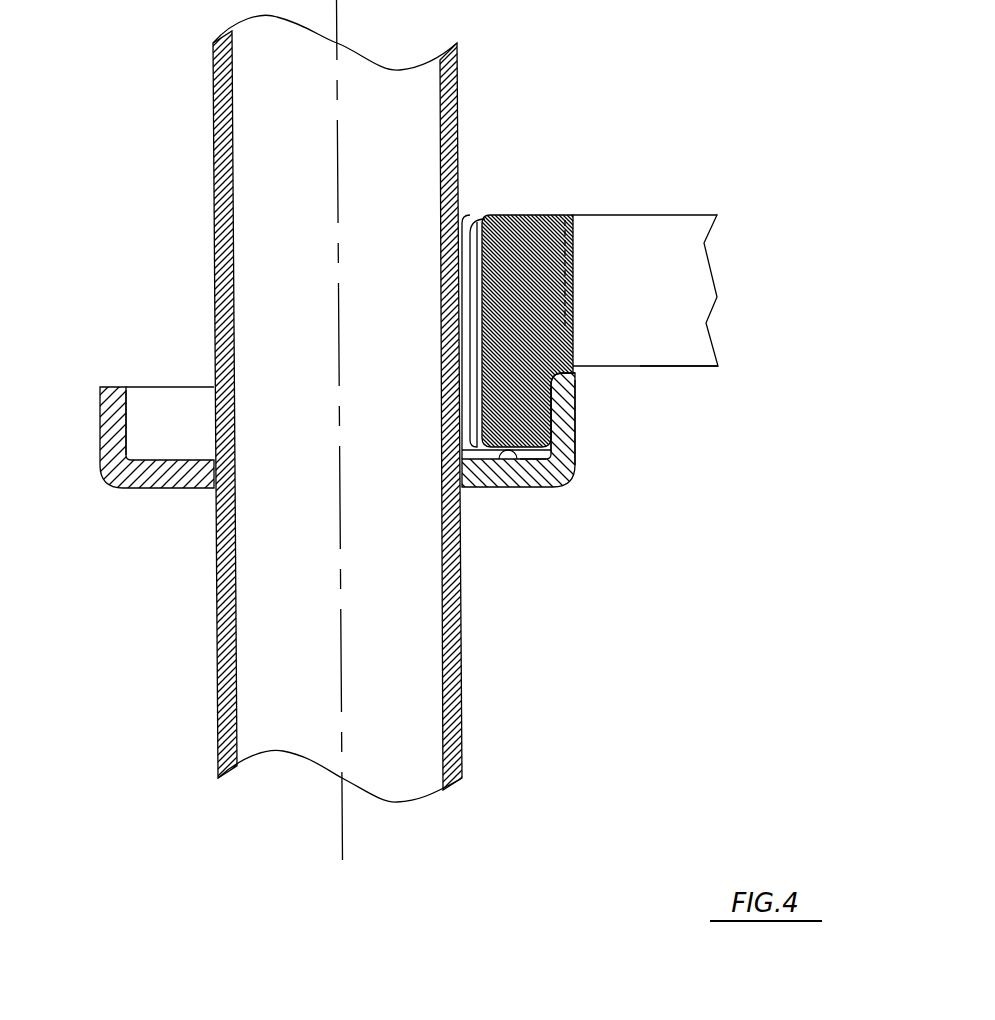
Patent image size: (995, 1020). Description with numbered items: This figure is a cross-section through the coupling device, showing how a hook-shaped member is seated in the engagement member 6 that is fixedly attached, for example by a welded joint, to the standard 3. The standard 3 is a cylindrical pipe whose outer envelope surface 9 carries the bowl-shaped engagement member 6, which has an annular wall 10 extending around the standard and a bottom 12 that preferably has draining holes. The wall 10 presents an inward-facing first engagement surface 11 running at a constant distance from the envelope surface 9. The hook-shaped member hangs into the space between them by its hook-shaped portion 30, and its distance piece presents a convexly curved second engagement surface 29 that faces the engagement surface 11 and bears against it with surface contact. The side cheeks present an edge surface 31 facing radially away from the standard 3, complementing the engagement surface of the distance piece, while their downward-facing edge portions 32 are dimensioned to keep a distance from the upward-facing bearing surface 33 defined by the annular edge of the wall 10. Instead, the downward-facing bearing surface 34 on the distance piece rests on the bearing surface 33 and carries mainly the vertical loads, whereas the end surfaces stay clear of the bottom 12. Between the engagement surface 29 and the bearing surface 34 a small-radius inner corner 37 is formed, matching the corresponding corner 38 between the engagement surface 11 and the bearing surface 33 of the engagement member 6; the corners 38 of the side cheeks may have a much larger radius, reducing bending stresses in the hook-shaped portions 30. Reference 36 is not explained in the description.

The standard 3 is at (460, 98).
The engagement member 6 is at (570, 488).
The envelope surface 9 is at (457, 195).
The annular wall 10 is at (100, 432).
The first engagement surface 11 is at (127, 426).
The bottom 12 is at (495, 487).
The second engagement surface 29 is at (575, 433).
The hook-shaped portion 30 is at (470, 487).
The edge surface 31 is at (575, 452).
The downward-facing edge portion 32 is at (683, 368).
The upward-facing bearing surface 33 is at (573, 373).
The downward-facing bearing surface 34 is at (575, 407).
The spacer 36 is at (531, 487).
The inner corner 37 is at (575, 390).
The corner 38 is at (551, 362).